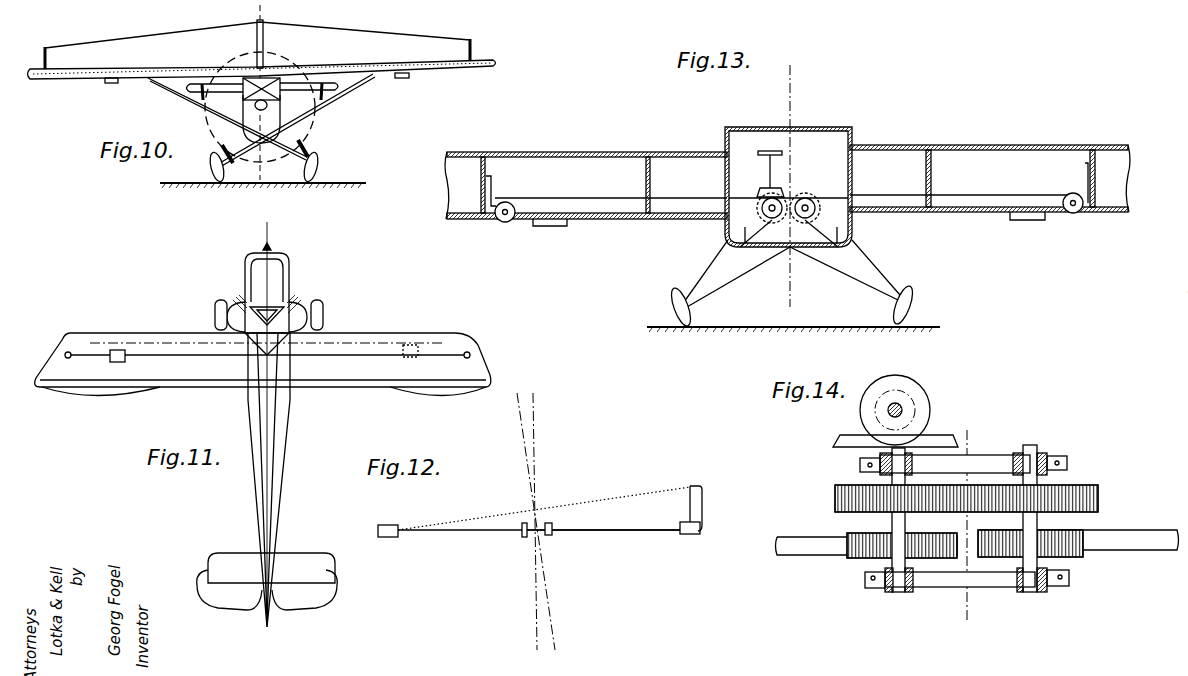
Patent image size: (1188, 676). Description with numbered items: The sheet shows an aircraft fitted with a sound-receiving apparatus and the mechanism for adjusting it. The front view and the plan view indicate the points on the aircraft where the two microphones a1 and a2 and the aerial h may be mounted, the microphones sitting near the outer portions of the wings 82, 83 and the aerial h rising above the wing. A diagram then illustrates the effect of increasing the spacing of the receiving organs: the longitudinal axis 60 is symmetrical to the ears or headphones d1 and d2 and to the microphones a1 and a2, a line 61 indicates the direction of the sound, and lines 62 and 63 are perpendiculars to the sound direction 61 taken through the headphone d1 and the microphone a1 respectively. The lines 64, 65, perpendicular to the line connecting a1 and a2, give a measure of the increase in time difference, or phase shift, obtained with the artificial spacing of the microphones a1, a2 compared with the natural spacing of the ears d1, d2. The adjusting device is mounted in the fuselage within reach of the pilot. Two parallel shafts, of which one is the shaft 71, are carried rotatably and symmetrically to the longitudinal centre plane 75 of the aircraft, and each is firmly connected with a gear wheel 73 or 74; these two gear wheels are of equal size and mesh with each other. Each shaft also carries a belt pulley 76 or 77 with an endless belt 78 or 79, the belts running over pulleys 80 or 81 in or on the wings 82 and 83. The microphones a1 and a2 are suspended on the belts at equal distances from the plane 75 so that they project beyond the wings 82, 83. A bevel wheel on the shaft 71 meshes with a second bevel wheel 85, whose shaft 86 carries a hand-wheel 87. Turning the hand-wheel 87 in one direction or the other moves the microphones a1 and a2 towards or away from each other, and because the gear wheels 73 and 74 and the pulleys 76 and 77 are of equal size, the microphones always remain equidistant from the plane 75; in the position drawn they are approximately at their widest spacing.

In FIG. 10, the aerial h is at (201, 36).
In FIG. 11, the aerial h is at (346, 343).
In FIG. 10, the microphone a1 is at (117, 84).
In FIG. 11, the microphone a1 is at (118, 350).
In FIG. 12, the microphone a1 is at (394, 537).
In FIG. 13, the microphone a1 is at (556, 227).
In FIG. 10, the microphone a2 is at (405, 79).
In FIG. 11, the microphone a2 is at (410, 345).
In FIG. 12, the microphone a2 is at (690, 534).
In FIG. 13, the microphone a2 is at (1033, 221).
In FIG. 12, the headphone d1 is at (523, 537).
In FIG. 12, the headphone d2 is at (549, 535).
In FIG. 12, the longitudinal axis 60 is at (528, 521).
In FIG. 12, the sound direction 61 is at (545, 594).
In FIG. 12, the perpendicular to the sound direction 62 is at (536, 527).
In FIG. 12, the perpendicular to the sound direction 63 is at (480, 517).
In FIG. 12, the line perpendicular to the connecting line 64 is at (556, 528).
In FIG. 12, the line perpendicular to the connecting line 65 is at (706, 505).
In FIG. 14, the shaft 71 is at (892, 525).
In FIG. 13, the gear wheel 73 is at (760, 206).
In FIG. 14, the gear wheel 73 is at (835, 490).
In FIG. 13, the gear wheel 74 is at (810, 196).
In FIG. 14, the gear wheel 74 is at (1098, 490).
In FIG. 13, the longitudinal centre plane 75 is at (792, 95).
In FIG. 14, the longitudinal centre plane 75 is at (968, 620).
In FIG. 13, the belt pulley 76 is at (737, 273).
In FIG. 14, the belt pulley 76 is at (870, 560).
In FIG. 13, the belt pulley 77 is at (845, 270).
In FIG. 14, the belt pulley 77 is at (1080, 557).
In FIG. 13, the endless belt 78 is at (674, 213).
In FIG. 14, the endless belt 78 is at (820, 548).
In FIG. 13, the endless belt 79 is at (963, 190).
In FIG. 14, the endless belt 79 is at (1128, 545).
In FIG. 13, the pulley 80 is at (512, 203).
In FIG. 13, the pulley 81 is at (1067, 195).
In FIG. 13, the wing 82 is at (592, 151).
In FIG. 13, the wing 83 is at (949, 145).
In FIG. 13, the bevel wheel 85 is at (778, 186).
In FIG. 14, the bevel wheel 85 is at (930, 404).
In FIG. 13, the shaft 86 is at (768, 166).
In FIG. 14, the shaft 86 is at (900, 406).
In FIG. 13, the hand-wheel 87 is at (772, 150).